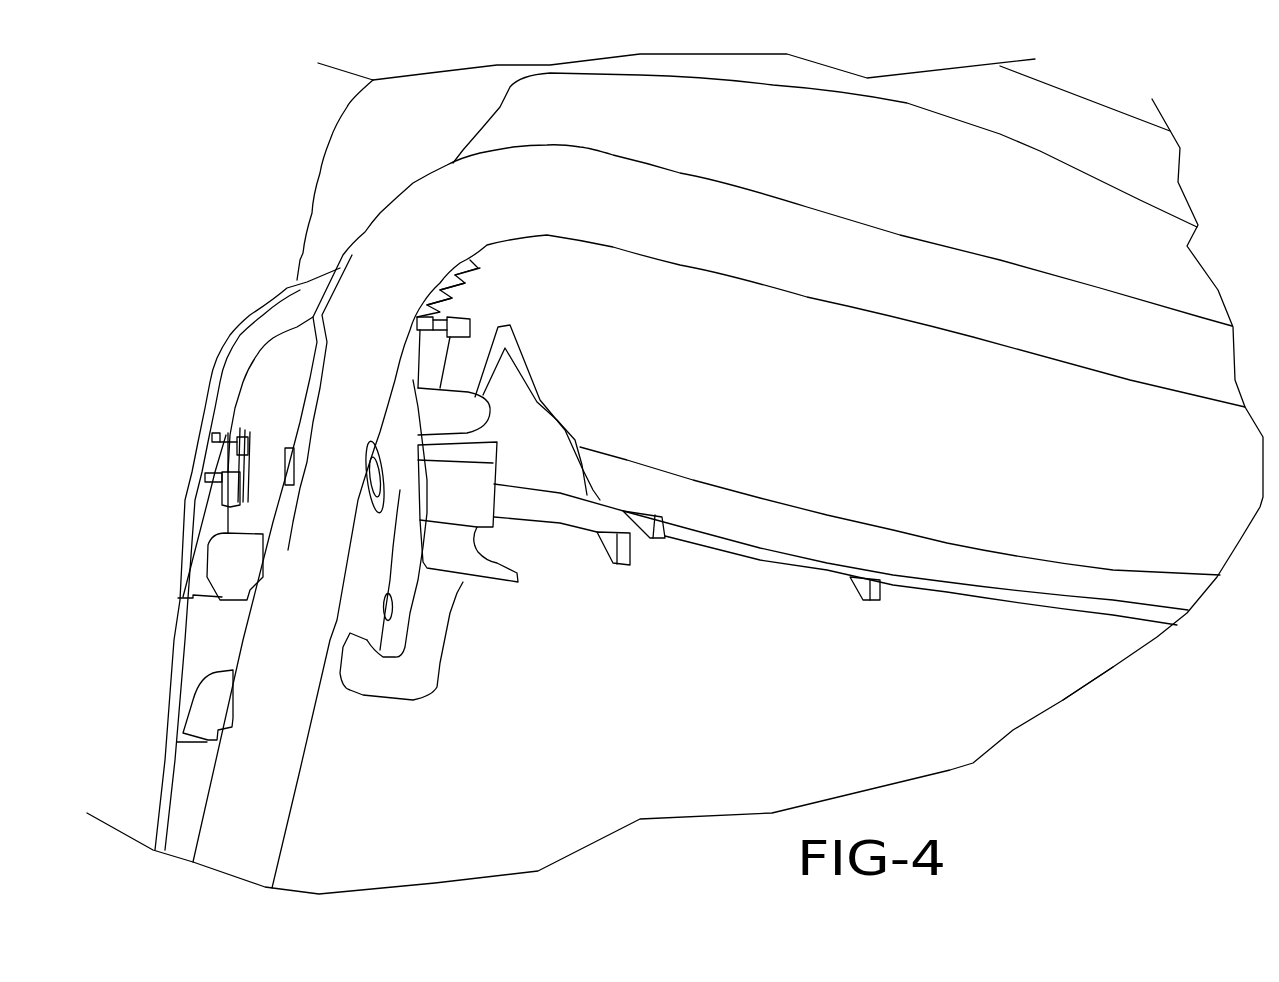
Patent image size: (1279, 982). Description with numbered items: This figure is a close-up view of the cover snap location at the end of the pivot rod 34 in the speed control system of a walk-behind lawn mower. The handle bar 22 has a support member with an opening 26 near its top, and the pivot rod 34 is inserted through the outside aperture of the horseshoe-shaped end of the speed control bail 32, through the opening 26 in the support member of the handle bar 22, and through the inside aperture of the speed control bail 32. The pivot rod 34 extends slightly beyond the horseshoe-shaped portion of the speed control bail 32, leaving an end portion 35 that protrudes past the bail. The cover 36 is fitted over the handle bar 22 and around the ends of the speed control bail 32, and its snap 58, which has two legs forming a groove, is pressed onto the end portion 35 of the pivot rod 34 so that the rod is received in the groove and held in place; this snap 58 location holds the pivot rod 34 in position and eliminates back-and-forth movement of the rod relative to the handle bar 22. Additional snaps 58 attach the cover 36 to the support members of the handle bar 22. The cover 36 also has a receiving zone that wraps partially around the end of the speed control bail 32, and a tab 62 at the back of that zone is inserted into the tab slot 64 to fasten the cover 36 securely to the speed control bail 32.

The handle bar 22 is at (370, 255).
The opening 26 is at (290, 455).
The speed control bail 32 is at (339, 143).
The pivot rod 34 is at (590, 510).
The end portion 35 is at (220, 457).
The cover 36 is at (1043, 647).
The snap 58 is at (203, 745).
The tab 62 is at (470, 283).
The tab slot 64 is at (470, 323).